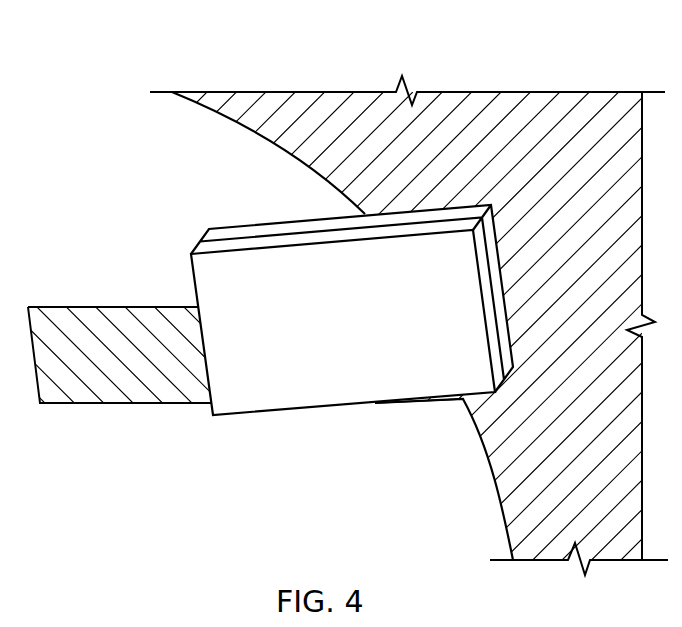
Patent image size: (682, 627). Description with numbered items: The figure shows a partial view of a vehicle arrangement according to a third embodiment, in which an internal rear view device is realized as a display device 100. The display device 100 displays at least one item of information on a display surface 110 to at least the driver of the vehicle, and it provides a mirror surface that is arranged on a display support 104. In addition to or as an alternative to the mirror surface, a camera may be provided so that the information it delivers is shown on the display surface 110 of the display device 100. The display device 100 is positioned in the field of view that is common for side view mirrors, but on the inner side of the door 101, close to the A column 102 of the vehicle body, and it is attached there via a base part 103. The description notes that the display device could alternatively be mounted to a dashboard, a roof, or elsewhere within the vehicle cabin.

The display device 100 is at (317, 331).
The door 101 is at (103, 357).
The A column 102 is at (480, 132).
The base part 103 is at (434, 399).
The display support 104 is at (238, 235).
The display surface 110 is at (284, 337).